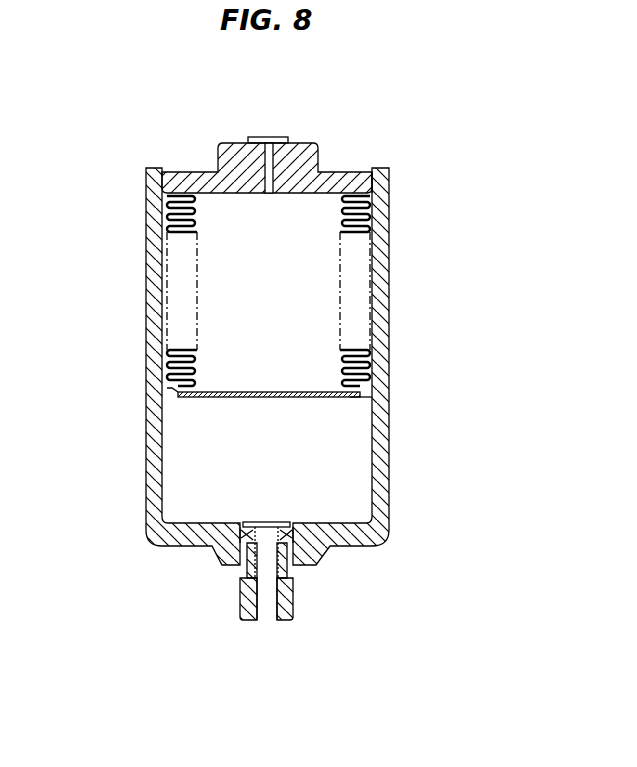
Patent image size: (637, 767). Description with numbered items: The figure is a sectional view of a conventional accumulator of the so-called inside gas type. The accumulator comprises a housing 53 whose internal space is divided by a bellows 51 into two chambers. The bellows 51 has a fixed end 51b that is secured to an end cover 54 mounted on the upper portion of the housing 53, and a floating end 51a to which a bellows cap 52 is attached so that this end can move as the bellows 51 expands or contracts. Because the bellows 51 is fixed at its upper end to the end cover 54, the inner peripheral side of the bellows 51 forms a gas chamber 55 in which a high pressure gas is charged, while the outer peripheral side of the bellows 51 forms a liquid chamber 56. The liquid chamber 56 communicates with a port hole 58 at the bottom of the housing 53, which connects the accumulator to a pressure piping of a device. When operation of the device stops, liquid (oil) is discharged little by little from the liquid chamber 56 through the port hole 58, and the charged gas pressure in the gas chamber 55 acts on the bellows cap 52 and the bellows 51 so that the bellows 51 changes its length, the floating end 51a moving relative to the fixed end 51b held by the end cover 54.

The bellows 51 is at (355, 297).
The floating end 51a is at (348, 398).
The fixed end 51b is at (375, 190).
The bellows cap 52 is at (307, 397).
The housing 53 is at (155, 210).
The end cover 54 is at (307, 153).
The gas chamber 55 is at (278, 297).
The liquid chamber 56 is at (284, 466).
The port hole 58 is at (267, 613).